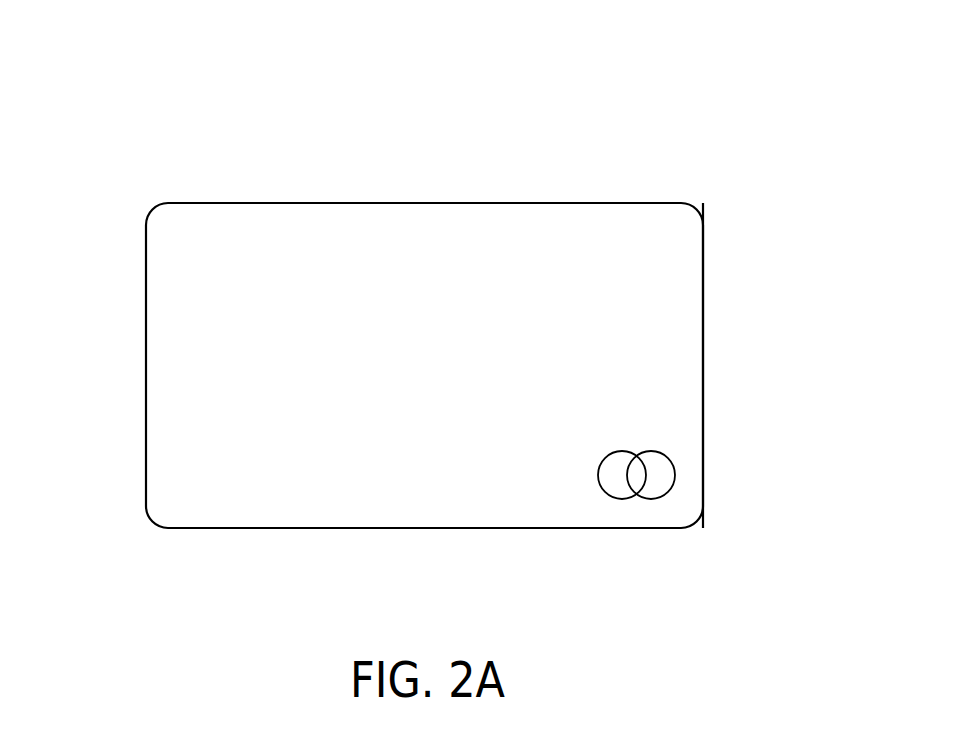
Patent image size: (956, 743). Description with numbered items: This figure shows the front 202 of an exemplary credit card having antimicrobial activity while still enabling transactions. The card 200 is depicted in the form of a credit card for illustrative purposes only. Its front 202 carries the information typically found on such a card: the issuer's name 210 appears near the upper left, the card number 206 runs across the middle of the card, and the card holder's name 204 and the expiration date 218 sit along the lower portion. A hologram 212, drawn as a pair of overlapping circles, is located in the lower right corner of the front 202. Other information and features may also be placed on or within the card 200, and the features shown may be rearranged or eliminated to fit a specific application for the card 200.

The card 200 is at (753, 110).
The front 202 is at (704, 365).
The card holder's name 204 is at (288, 482).
The card number 206 is at (178, 410).
The issuer's name 210 is at (177, 248).
The hologram 212 is at (682, 474).
The expiration date 218 is at (530, 482).